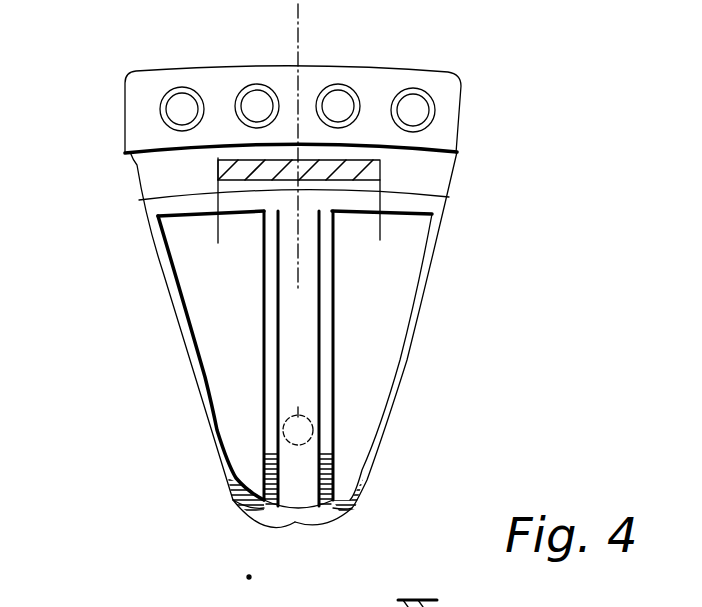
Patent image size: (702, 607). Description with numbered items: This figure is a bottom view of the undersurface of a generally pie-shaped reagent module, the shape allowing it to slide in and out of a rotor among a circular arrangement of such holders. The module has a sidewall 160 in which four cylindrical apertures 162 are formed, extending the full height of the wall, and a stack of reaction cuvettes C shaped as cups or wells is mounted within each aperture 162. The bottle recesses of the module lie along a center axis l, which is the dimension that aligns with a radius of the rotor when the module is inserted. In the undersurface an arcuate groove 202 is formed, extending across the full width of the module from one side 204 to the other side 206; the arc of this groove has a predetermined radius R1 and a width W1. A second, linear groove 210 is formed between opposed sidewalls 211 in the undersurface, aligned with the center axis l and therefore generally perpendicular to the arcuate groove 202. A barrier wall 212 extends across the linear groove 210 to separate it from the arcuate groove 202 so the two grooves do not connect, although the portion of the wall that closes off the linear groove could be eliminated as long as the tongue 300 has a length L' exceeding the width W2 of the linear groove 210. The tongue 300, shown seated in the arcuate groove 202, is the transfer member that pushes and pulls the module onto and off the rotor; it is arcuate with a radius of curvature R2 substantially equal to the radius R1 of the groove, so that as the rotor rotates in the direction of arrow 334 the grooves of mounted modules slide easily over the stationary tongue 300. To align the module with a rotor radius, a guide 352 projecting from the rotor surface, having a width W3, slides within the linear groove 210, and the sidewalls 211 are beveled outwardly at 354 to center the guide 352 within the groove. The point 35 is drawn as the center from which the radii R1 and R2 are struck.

The sidewall 160 is at (112, 95).
The cylindrical apertures 162 is at (250, 96).
The cuvettes C is at (183, 105).
The center axis l is at (300, 42).
The arcuate groove 202 is at (331, 375).
The side 204 is at (413, 338).
The side 206 is at (172, 321).
The arrow 334 is at (406, 170).
The tongue 300 is at (196, 172).
The barrier wall 212 is at (262, 260).
The opposed sidewalls 211 is at (265, 412).
The linear groove 210 is at (320, 425).
The guide 352 is at (303, 443).
The beveled portions 354 is at (329, 508).
The center point 35 is at (249, 168).
The width of arcuate groove W1 is at (162, 168).
The width of linear groove W2 is at (286, 273).
The width of guides W3 is at (311, 468).
The tongue length L' is at (298, 256).
The radius of arcuate groove R1 is at (249, 577).
The radius of curvature of tongue R2 is at (249, 577).